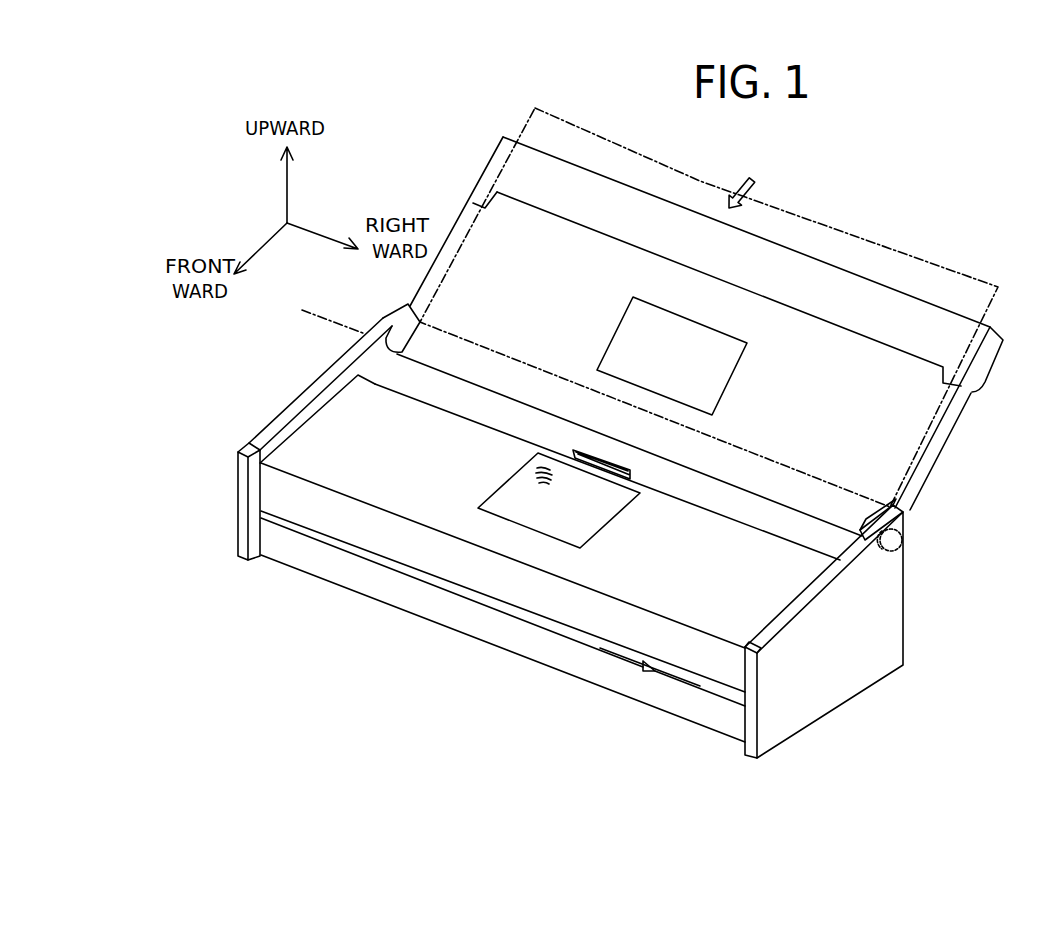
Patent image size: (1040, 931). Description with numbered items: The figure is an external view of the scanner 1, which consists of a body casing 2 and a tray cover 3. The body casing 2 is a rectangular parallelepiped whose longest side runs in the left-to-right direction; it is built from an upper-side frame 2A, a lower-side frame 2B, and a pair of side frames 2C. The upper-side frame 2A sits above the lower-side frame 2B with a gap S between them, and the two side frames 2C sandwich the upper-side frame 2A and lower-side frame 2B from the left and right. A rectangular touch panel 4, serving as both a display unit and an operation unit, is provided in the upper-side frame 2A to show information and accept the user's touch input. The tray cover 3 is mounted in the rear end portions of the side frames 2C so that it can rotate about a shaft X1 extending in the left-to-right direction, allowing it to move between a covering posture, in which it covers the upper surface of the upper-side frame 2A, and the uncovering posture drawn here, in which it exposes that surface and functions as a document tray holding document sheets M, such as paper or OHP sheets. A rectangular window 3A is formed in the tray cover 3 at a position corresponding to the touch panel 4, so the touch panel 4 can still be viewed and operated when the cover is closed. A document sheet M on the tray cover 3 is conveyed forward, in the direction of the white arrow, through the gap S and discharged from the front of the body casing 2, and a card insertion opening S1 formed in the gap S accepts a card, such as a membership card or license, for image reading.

The scanner 1 is at (503, 79).
The body casing 2 is at (861, 726).
The upper-side frame 2A is at (282, 491).
The lower-side frame 2B is at (283, 551).
The side frames 2C is at (250, 447).
The tray cover 3 is at (955, 415).
The rectangular window 3A is at (735, 384).
The touch panel 4 is at (528, 513).
The gap S is at (556, 648).
The card insertion opening S1 is at (713, 686).
The document sheets M is at (890, 248).
The shaft X1 is at (895, 541).